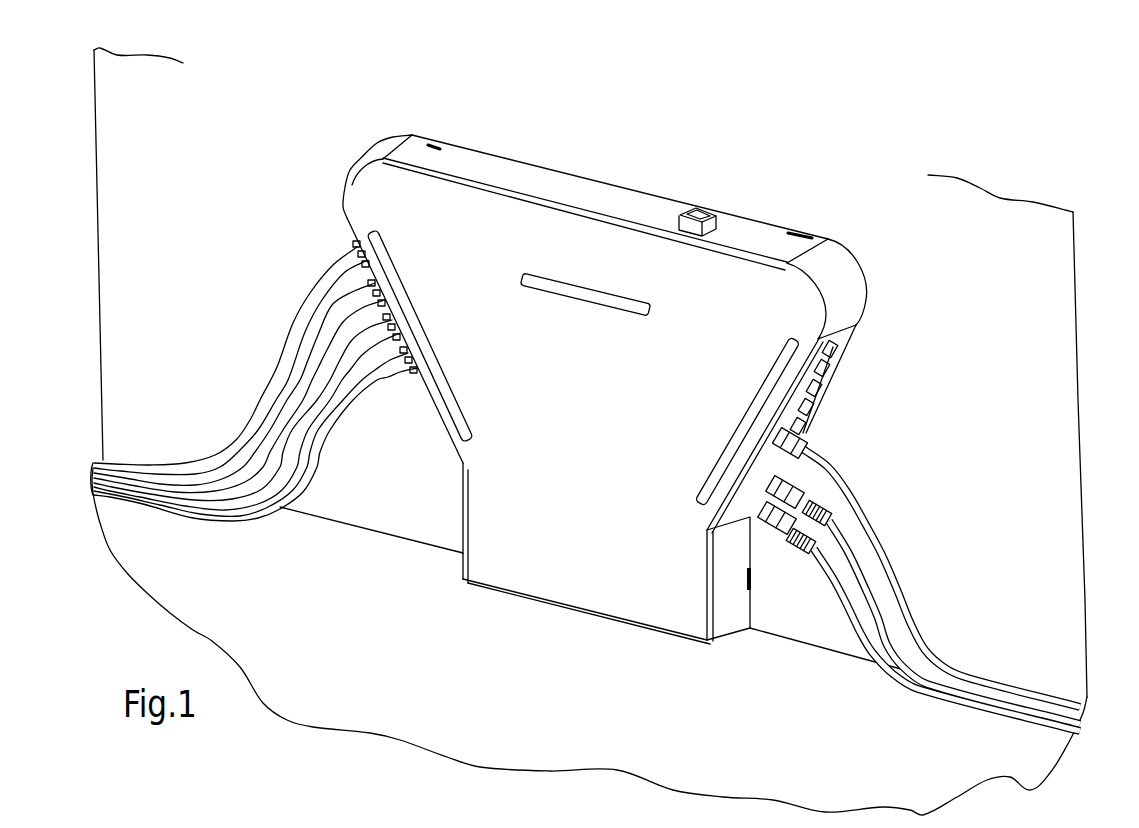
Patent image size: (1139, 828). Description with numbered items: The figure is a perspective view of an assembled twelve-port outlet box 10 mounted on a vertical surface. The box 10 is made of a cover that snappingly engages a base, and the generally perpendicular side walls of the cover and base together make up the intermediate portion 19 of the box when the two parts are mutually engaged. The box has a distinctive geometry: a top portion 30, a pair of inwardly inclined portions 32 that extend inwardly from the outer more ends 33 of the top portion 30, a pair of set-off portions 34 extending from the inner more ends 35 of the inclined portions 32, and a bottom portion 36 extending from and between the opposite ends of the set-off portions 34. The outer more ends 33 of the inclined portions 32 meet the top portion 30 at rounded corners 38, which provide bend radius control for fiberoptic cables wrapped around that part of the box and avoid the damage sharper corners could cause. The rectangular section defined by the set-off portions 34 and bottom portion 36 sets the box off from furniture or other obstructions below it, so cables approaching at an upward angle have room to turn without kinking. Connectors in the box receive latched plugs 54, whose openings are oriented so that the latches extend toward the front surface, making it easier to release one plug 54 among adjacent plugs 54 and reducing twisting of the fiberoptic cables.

The outlet box 10 is at (607, 147).
The intermediate portion 19 is at (539, 184).
The top portion 30 is at (745, 223).
The inwardly inclined portions 32 is at (347, 222).
The outer more ends 33 is at (858, 326).
The set-off portions 34 is at (463, 517).
The inner more ends 35 is at (735, 520).
The bottom portion 36 is at (593, 612).
The rounded corners 38 is at (380, 147).
The latched plug 54 is at (807, 440).